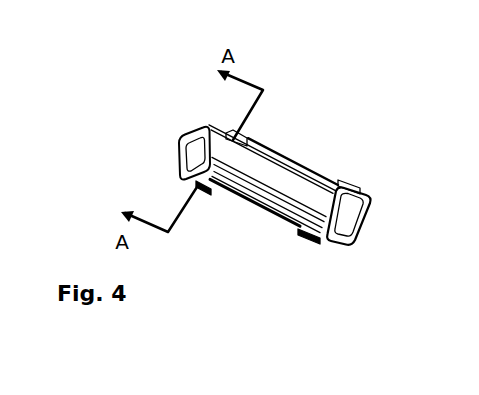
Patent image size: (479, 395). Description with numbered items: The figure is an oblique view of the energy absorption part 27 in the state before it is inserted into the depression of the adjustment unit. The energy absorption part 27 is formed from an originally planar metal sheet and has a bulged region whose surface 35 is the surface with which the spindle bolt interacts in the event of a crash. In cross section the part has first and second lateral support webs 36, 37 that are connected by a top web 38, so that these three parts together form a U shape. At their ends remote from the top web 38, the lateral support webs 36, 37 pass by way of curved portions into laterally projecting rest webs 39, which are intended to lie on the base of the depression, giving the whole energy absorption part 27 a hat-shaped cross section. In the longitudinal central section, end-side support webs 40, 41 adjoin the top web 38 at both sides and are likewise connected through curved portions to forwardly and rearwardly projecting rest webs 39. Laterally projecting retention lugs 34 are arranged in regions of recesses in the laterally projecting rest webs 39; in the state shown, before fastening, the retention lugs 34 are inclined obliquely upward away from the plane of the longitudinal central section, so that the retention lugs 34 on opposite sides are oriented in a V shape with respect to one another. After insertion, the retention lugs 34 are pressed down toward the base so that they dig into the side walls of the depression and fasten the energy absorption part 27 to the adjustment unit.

The energy absorption part 27 is at (349, 158).
The retention lugs 34 is at (352, 182).
The surface 35 is at (271, 175).
The first lateral support web 36 is at (262, 205).
The second lateral support web 37 is at (300, 188).
The top web 38 is at (292, 200).
The rest webs 39 is at (170, 157).
The end-side support web 40 is at (192, 138).
The end-side support web 41 is at (348, 213).